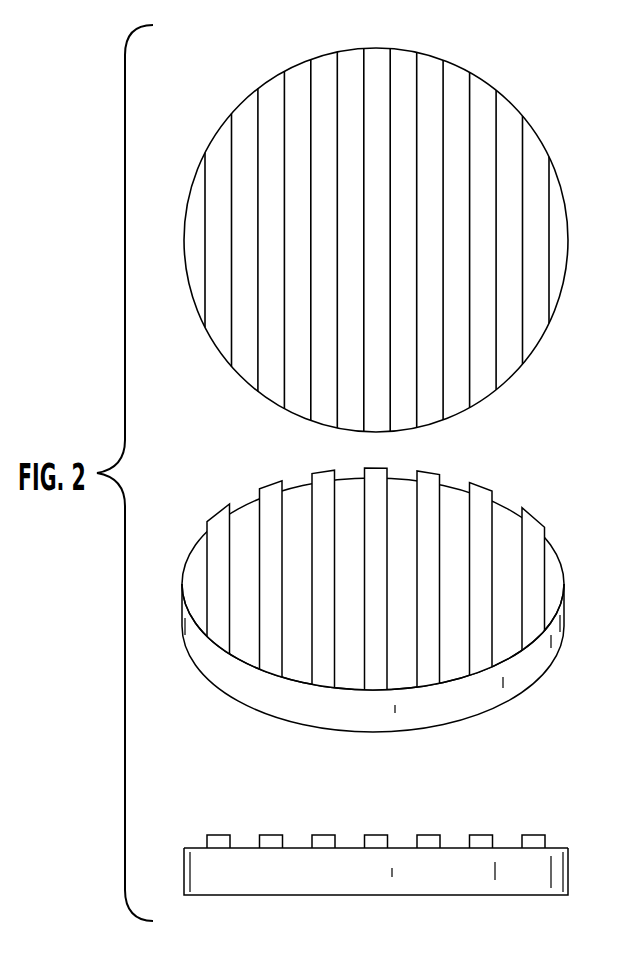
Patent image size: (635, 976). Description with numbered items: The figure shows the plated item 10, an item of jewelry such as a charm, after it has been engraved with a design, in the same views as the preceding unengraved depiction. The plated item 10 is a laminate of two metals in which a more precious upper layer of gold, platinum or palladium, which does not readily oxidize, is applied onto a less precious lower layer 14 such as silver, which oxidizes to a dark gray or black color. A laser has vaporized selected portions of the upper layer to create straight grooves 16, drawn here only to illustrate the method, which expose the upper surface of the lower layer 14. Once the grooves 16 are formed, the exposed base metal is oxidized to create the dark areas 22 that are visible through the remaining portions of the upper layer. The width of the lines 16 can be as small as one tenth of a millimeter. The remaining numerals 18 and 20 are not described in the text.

The plated item 10 is at (600, 94).
The lower layer 14 is at (513, 697).
The grooves 16 is at (510, 102).
The fin 18 is at (217, 133).
The plurality of fins 20 is at (295, 62).
The dark areas 22 is at (220, 320).